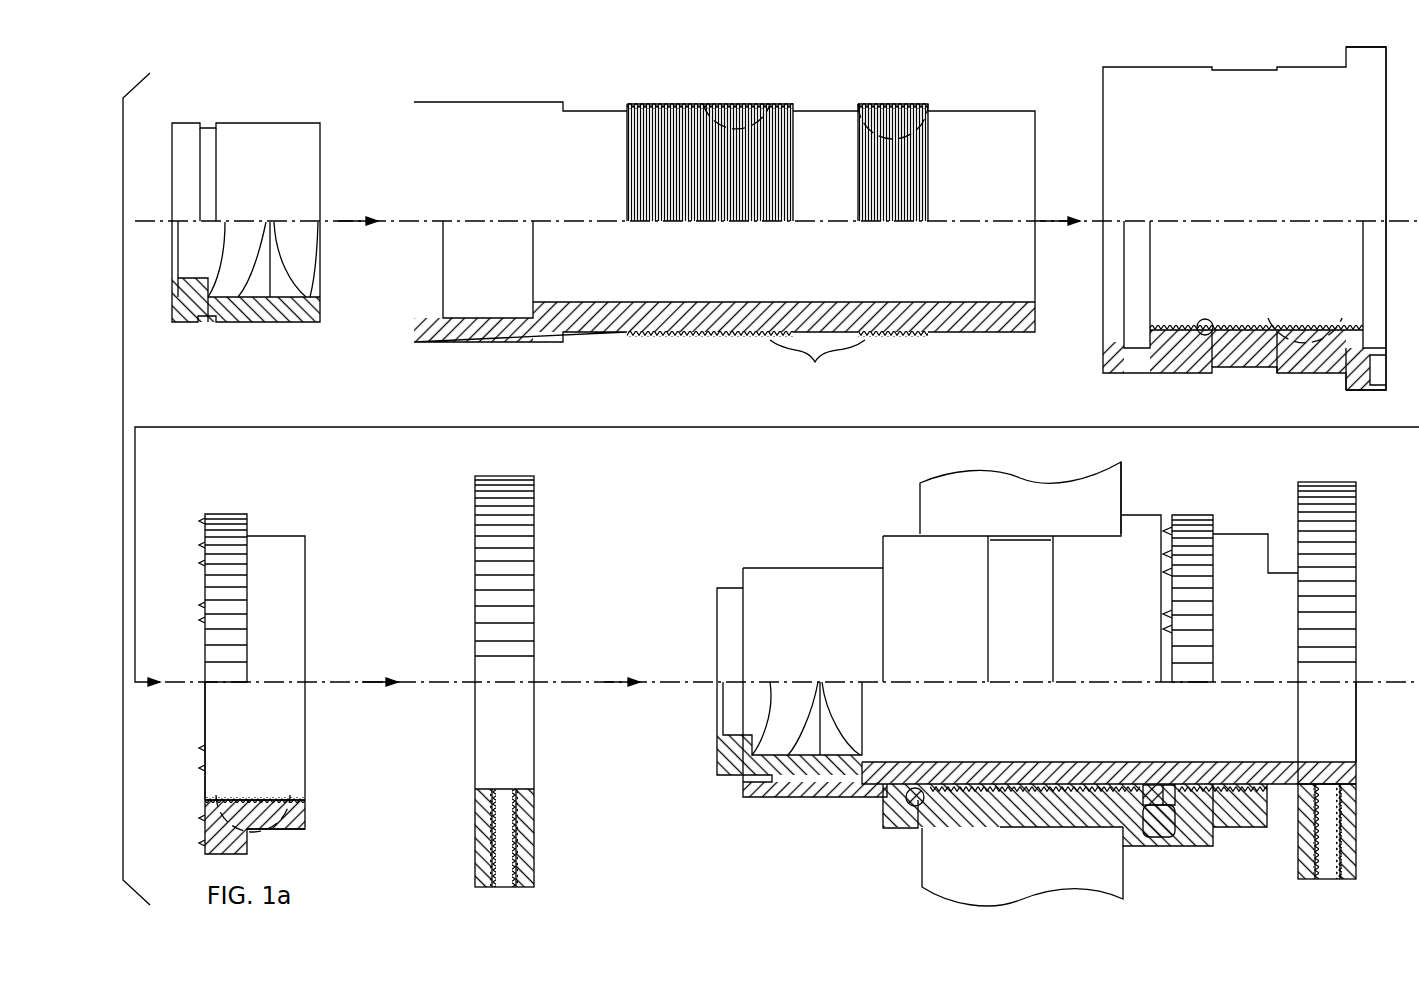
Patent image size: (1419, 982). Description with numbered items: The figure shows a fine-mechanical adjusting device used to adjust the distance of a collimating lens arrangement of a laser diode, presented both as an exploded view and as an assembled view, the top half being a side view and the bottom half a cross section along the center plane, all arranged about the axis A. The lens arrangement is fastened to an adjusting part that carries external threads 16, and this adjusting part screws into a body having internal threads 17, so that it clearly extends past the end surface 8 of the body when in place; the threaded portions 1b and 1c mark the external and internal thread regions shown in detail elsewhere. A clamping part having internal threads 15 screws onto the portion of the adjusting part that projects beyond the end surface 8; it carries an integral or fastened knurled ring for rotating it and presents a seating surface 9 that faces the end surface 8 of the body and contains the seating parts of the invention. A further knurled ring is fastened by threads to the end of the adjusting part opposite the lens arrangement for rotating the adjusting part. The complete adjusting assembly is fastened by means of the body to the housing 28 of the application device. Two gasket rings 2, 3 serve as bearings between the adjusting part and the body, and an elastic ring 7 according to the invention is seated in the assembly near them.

The threaded portions 1b is at (909, 95).
The threaded portions 1c is at (1342, 312).
The gasket ring 2 is at (908, 808).
The gasket ring 3 is at (1155, 785).
The elastic ring 7 is at (1150, 838).
The end surface 8 is at (1386, 115).
The seating surface 9 is at (205, 778).
The internal threads 15 is at (292, 800).
The external threads 16 is at (817, 367).
The internal threads 17 is at (1195, 335).
The housing 28 is at (920, 508).
The axis A is at (1372, 681).